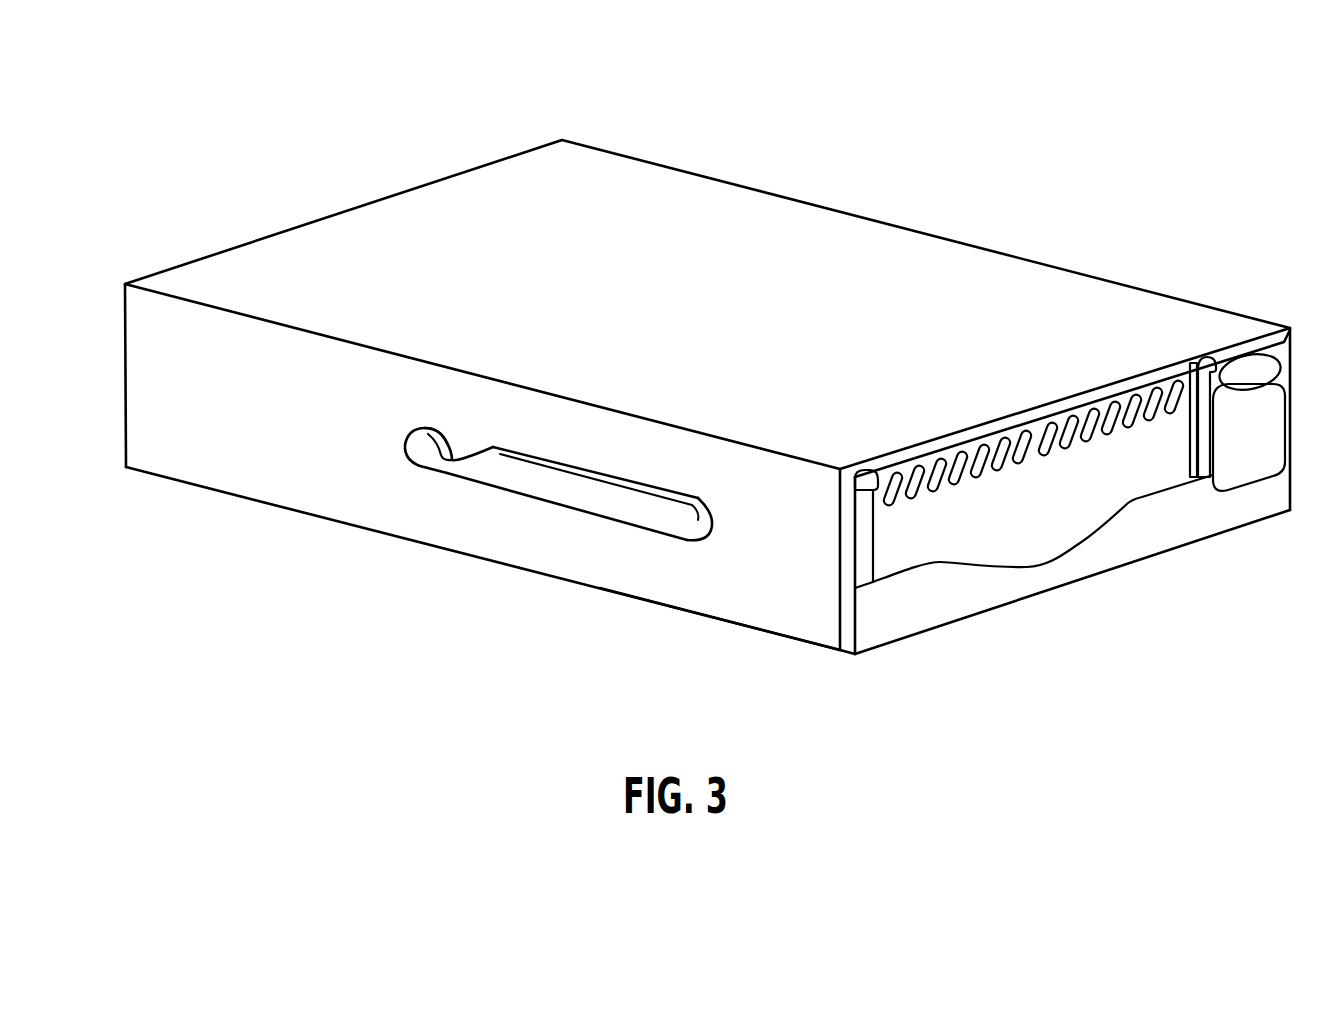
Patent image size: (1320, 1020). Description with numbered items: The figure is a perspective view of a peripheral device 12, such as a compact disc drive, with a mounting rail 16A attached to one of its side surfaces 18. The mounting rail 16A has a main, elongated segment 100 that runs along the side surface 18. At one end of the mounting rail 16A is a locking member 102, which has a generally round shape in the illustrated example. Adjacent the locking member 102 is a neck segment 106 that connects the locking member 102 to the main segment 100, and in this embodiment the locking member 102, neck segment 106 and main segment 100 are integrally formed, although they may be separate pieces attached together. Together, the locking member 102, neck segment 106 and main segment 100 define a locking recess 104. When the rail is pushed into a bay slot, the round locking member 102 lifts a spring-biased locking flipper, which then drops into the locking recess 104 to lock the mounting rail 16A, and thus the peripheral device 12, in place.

The peripheral device 12 is at (812, 182).
The mounting rail 16A is at (515, 520).
The side surface 18 is at (720, 644).
The main segment 100 is at (579, 546).
The locking member 102 is at (338, 499).
The locking recess 104 is at (441, 428).
The neck segment 106 is at (391, 520).